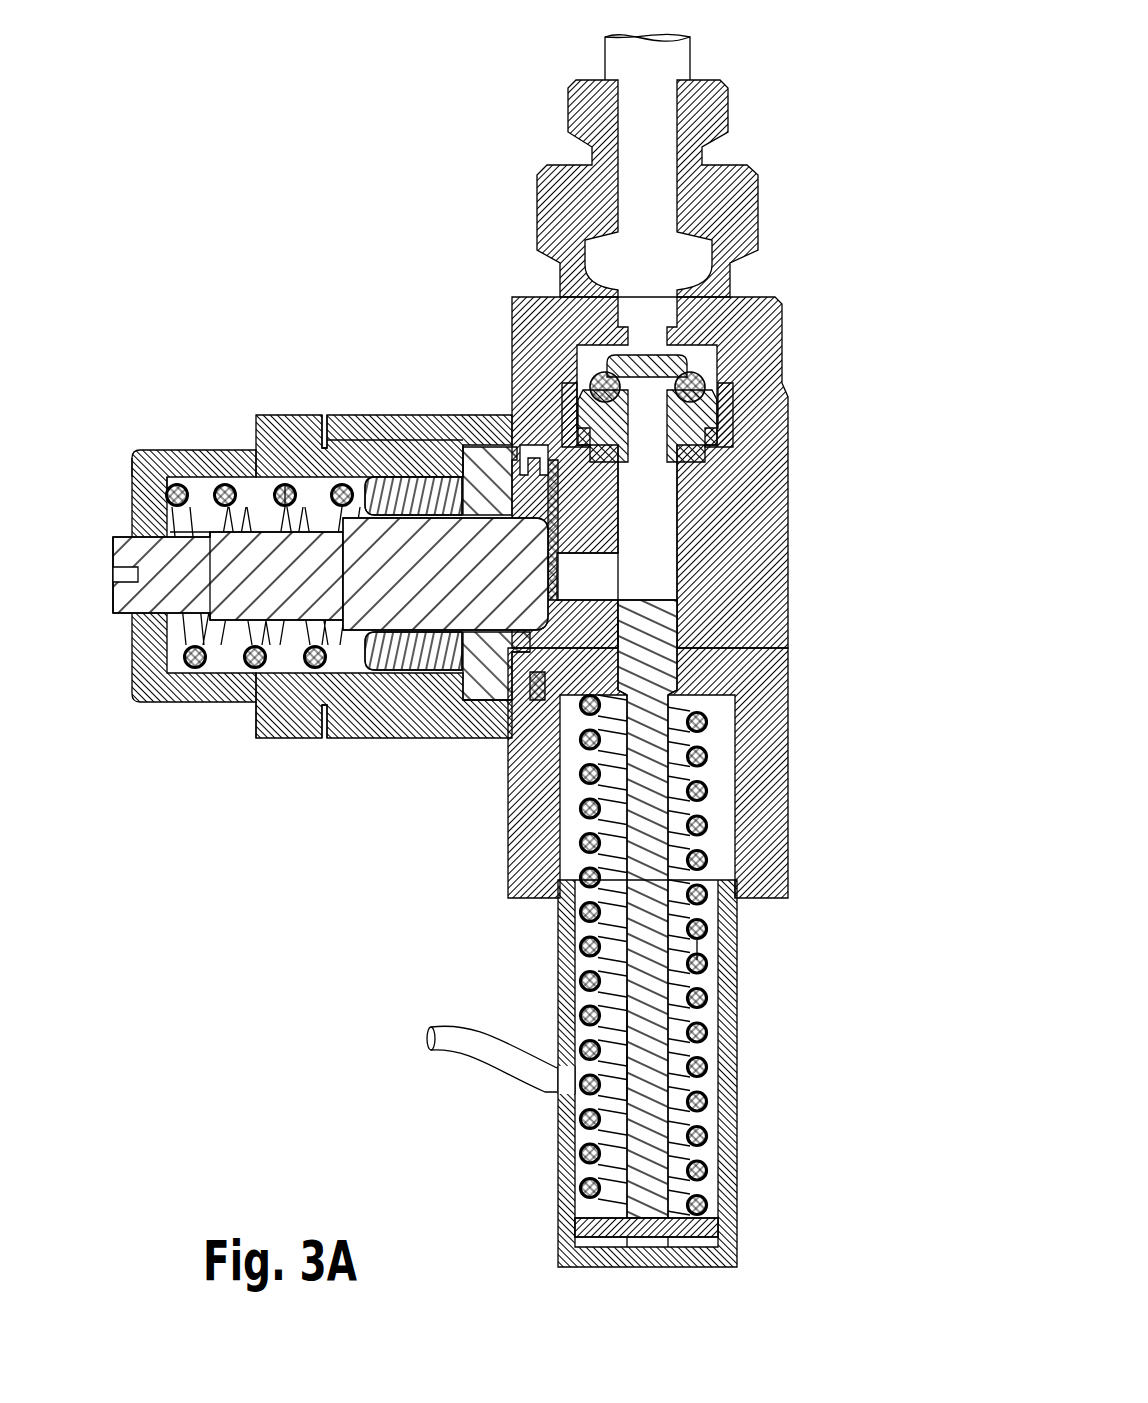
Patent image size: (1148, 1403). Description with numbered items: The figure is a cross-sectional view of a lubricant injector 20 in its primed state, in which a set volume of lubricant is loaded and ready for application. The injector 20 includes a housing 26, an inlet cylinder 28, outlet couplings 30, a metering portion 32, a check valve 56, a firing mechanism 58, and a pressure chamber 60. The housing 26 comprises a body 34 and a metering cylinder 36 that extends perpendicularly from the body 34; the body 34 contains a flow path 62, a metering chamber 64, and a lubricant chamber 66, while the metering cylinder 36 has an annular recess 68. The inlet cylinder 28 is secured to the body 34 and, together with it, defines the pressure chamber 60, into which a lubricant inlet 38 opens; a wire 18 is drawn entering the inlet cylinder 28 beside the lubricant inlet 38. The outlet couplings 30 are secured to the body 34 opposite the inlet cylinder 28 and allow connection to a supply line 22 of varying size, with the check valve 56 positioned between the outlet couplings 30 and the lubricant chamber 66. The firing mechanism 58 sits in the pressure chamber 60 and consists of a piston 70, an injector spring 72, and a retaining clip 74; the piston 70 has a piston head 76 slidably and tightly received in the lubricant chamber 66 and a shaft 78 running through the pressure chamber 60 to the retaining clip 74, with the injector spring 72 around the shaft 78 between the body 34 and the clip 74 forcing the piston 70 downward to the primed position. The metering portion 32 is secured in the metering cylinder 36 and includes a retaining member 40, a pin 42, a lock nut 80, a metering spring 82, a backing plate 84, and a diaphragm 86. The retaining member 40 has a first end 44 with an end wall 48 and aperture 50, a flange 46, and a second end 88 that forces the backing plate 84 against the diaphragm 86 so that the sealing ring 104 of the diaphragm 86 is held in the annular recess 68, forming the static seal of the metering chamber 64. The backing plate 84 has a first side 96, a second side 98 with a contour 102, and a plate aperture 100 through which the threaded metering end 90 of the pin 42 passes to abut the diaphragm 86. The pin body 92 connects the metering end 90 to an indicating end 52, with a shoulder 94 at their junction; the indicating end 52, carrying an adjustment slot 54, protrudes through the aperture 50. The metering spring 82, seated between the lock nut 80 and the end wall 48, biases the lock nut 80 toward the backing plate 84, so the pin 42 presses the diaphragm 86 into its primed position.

The wire 18 is at (458, 1055).
The lubricant injector 20 is at (885, 105).
The supply line 22 is at (693, 63).
The housing 26 is at (785, 337).
The inlet cylinder 28 is at (742, 1127).
The outlet couplings 30 is at (740, 182).
The metering portion 32 is at (250, 395).
The body 34 is at (765, 623).
The metering cylinder 36 is at (337, 425).
The lubricant inlet 38 is at (553, 1082).
The retaining member 40 is at (140, 450).
The pin 42 is at (187, 528).
The first end 44 is at (155, 680).
The flange 46 is at (263, 713).
The end wall 48 is at (135, 470).
The aperture 50 is at (205, 617).
The indicating end 52 is at (118, 552).
The adjustment slot 54 is at (120, 575).
The check valve 56 is at (680, 362).
The firing mechanism 58 is at (705, 958).
The pressure chamber 60 is at (710, 913).
The flow path 62 is at (586, 548).
The metering chamber 64 is at (548, 498).
The lubricant chamber 66 is at (682, 513).
The annular recess 68 is at (538, 703).
The piston 70 is at (670, 806).
The injector spring 72 is at (723, 893).
The retaining clip 74 is at (682, 1227).
The piston head 76 is at (663, 640).
The shaft 78 is at (650, 1013).
The lock nut 80 is at (393, 500).
The metering spring 82 is at (287, 492).
The backing plate 84 is at (475, 450).
The diaphragm 86 is at (562, 575).
The second end 88 is at (365, 455).
The metering end 90 is at (365, 600).
The pin body 92 is at (248, 585).
The shoulder 94 is at (152, 617).
The first side 96 is at (490, 642).
The second side 98 is at (500, 700).
The plate aperture 100 is at (465, 640).
The contour 102 is at (510, 660).
The sealing ring 104 is at (535, 680).